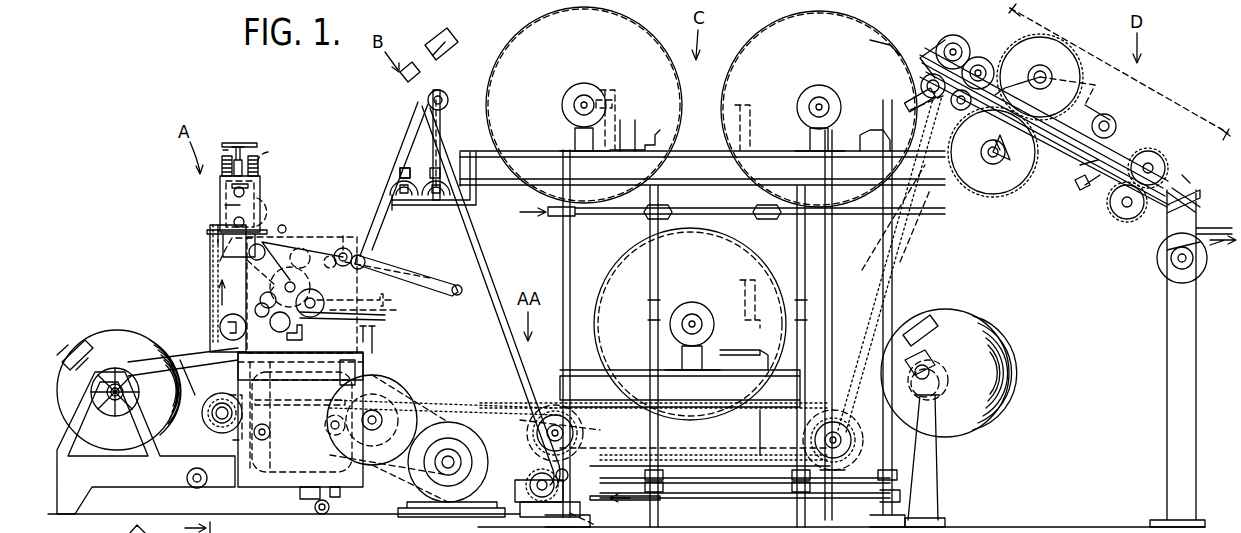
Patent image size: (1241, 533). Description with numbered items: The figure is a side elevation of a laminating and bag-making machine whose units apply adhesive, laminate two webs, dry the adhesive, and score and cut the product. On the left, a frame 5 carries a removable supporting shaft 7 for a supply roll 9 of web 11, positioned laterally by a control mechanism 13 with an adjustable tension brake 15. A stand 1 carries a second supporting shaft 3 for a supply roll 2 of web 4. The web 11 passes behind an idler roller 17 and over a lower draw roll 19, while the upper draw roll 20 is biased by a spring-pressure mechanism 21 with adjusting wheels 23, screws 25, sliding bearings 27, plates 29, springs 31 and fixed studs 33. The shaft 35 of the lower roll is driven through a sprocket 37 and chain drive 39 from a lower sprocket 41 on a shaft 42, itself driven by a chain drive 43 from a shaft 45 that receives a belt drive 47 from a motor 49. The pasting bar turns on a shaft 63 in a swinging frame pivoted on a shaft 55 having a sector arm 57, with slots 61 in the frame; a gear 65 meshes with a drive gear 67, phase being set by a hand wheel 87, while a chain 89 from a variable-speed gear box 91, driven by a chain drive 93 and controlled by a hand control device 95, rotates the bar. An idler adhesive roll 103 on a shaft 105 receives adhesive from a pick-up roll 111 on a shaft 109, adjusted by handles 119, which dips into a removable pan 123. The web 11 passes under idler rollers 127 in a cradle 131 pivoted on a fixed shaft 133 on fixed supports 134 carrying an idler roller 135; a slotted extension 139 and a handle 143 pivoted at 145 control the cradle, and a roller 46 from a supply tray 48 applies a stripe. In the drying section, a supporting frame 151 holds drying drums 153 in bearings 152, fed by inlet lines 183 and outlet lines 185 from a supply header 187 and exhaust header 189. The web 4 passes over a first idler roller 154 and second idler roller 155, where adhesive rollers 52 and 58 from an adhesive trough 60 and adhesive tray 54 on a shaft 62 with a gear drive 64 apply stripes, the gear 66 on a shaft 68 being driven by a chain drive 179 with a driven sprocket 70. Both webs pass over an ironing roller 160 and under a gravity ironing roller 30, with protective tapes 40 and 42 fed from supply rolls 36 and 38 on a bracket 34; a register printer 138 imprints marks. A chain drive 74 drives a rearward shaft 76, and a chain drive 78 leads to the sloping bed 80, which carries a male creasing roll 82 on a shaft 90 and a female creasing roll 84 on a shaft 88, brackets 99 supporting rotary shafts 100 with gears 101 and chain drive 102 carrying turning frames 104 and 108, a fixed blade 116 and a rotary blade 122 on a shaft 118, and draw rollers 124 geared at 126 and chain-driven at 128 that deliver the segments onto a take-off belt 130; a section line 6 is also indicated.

The stand 1 is at (938, 476).
The supply roll 2 is at (988, 345).
The supporting shaft 3 is at (930, 360).
The web 4 is at (480, 258).
The frame 5 is at (250, 488).
The section line 6 is at (1228, 132).
The supporting shaft 7 is at (115, 368).
The supply roll 9 is at (140, 345).
The web 11 is at (210, 238).
The control mechanism 13 is at (118, 380).
The adjustable tension brake 15 is at (83, 350).
The idler roller 17 is at (222, 322).
The lower draw roll 19 is at (228, 212).
The upper draw roll 20 is at (258, 185).
The spring-pressure mechanism 21 is at (262, 158).
The adjusting wheels 23 is at (236, 142).
The screws 25 is at (246, 148).
The sliding bearings 27 is at (222, 190).
The plates 29 is at (222, 178).
The gravity ironing roller 30 is at (420, 92).
The springs 31 is at (260, 166).
The fixed studs 33 is at (226, 150).
The bracket 34 is at (478, 192).
The shaft 35 is at (215, 229).
The supply roll 36 is at (404, 210).
The sprocket 37 is at (255, 215).
The supply roll 38 is at (438, 210).
The chain drive 39 is at (212, 284).
The protective tape 40 is at (407, 168).
The lower sprocket 41 is at (202, 414).
The shaft / protective tape 42 is at (210, 420).
The chain drive 43 is at (215, 428).
The shaft 45 is at (375, 418).
The roller 46 is at (365, 258).
The belt drive 47 is at (448, 404).
The supply tray 48 is at (380, 272).
The motor 49 is at (455, 455).
The adhesive roller 52 is at (525, 482).
The adhesive tray 54 is at (535, 505).
The shaft 55 is at (289, 336).
The sector arm 57 is at (266, 308).
The adhesive roller 58 is at (528, 478).
The adhesive trough 60 is at (590, 523).
The slots 61 is at (256, 280).
The shaft 62 is at (560, 482).
The shaft 63 is at (300, 284).
The gear drive 64 is at (525, 440).
The gear 65 is at (330, 255).
The gear 66 is at (695, 448).
The drive gear 67 is at (272, 328).
The shaft 68 is at (580, 433).
The driven sprocket 70 is at (538, 410).
The chain drive 74 is at (748, 425).
The rearward shaft 76 is at (822, 437).
The chain drive 78 is at (870, 290).
The sloping bed 80 is at (1065, 160).
The male creasing roll 82 is at (945, 35).
The female creasing roll 84 is at (912, 106).
The hand wheel 87 is at (398, 300).
The shaft 88 is at (915, 92).
The chain 89 is at (306, 362).
The shaft 90 is at (940, 40).
The variable-speed transmission gear box 91 is at (292, 460).
The chain drive 93 is at (345, 430).
The hand control device 95 is at (314, 505).
The brackets 99 is at (1055, 88).
The rotary shafts 100 is at (1008, 105).
The gears 101 is at (1068, 40).
The chain drive 102 is at (985, 55).
The idler adhesive roll 103 is at (373, 315).
The turning frame 104 is at (1033, 72).
The shaft 105 is at (325, 300).
The turning frame 108 is at (970, 120).
The shaft 109 is at (368, 340).
The adhesive pick-up roll 111 is at (366, 325).
The fixed blade 116 is at (1090, 185).
The shaft 118 is at (1100, 112).
The handles 119 is at (376, 349).
The rotary blade 122 is at (1078, 192).
The removable pan 123 is at (338, 376).
The draw rollers 124 is at (1175, 182).
The gears 126 is at (1160, 155).
The idler rollers 127 is at (222, 252).
The chain drive 128 is at (1152, 148).
The take-off belt 130 is at (1194, 358).
The cradle 131 is at (282, 225).
The fixed shaft 133 is at (345, 248).
The fixed supports 134 is at (415, 310).
The idler roller 135 is at (342, 232).
The register printer 138 is at (447, 46).
The slotted extension 139 is at (270, 245).
The handle 143 is at (421, 281).
The pivot 145 is at (298, 247).
The supporting frame 151 is at (695, 150).
The bearings 152 is at (575, 103).
The drying drums 153 is at (615, 30).
The first idler roller 154 is at (840, 470).
The second idler roller 155 is at (710, 467).
The ironing roller 160 is at (446, 106).
The chain drive 179 is at (480, 402).
The inlet lines 183 is at (606, 88).
The outlet lines 185 is at (636, 130).
The supply header 187 is at (680, 214).
The exhaust header 189 is at (742, 498).